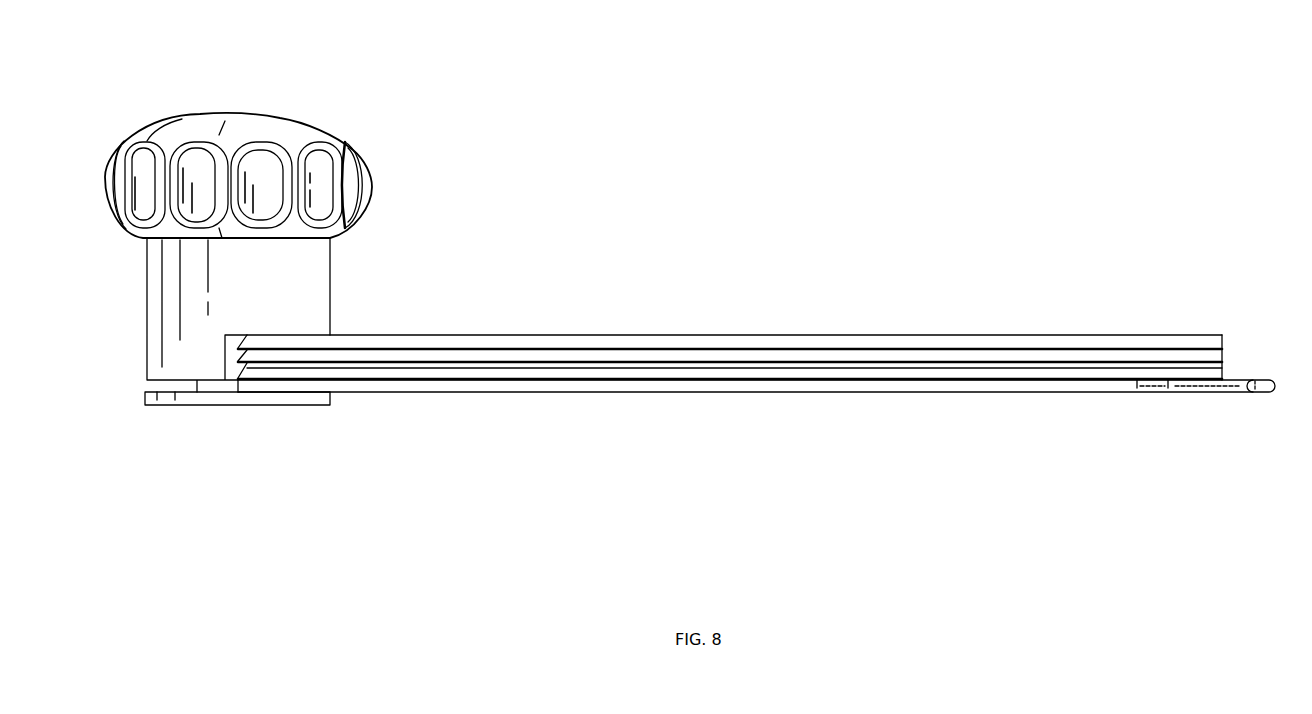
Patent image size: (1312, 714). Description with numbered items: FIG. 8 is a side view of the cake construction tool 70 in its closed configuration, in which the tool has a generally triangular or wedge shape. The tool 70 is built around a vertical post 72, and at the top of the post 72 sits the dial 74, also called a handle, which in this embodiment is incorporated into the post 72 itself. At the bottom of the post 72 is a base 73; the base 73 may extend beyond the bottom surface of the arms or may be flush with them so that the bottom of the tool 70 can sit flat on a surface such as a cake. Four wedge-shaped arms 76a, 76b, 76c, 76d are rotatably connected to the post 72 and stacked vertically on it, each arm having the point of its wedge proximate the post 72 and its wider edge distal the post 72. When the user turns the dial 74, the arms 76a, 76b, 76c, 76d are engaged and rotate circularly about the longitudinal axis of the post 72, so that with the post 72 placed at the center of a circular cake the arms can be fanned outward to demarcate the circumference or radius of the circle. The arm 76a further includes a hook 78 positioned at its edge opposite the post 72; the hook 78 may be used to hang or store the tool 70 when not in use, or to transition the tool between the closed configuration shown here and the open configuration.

The cake construction tool 70 is at (137, 117).
The vertical post 72 is at (323, 292).
The base 73 is at (185, 398).
The dial 74 is at (372, 157).
The wedge-shaped arm 76a is at (1033, 388).
The wedge-shaped arm 76b is at (1223, 375).
The wedge-shaped arm 76c is at (1223, 355).
The wedge-shaped arm 76d is at (1222, 337).
The hook 78 is at (1228, 392).